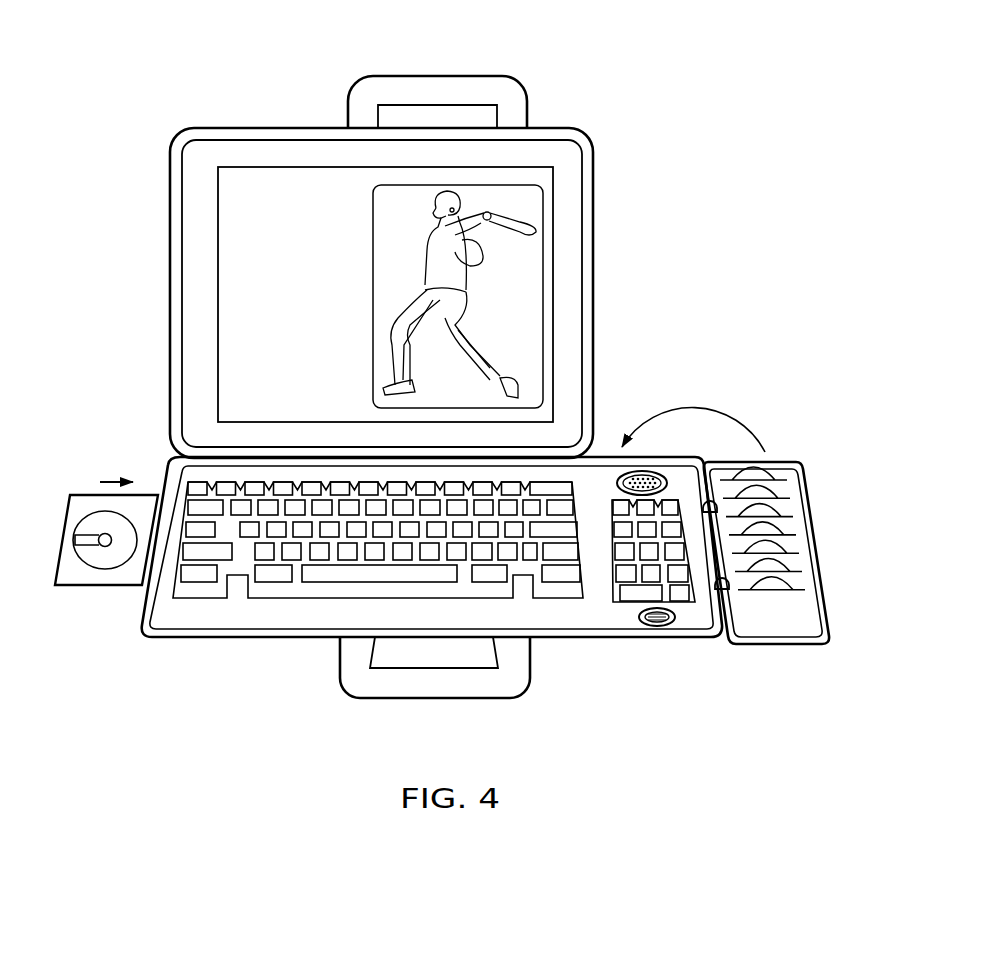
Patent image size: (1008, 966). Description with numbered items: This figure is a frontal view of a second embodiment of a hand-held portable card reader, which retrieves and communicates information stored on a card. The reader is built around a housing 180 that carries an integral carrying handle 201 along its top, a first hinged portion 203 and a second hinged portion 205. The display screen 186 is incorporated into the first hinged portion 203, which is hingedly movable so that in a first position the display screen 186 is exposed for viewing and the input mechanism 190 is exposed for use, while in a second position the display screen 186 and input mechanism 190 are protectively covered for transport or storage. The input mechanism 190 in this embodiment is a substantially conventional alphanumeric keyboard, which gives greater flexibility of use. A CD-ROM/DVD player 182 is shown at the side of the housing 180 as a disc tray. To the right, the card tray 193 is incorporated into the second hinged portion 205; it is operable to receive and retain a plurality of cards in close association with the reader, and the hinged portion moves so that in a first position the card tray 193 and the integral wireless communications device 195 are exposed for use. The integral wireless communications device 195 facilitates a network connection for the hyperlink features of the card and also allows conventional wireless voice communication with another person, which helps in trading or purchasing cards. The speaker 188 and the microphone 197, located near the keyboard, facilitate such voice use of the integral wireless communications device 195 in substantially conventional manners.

The housing 180 is at (133, 641).
The CD-ROM/DVD player 182 is at (97, 577).
The display screen 186 is at (546, 212).
The speaker 188 is at (655, 471).
The input mechanism 190 is at (278, 603).
The card tray 193 is at (811, 501).
The integral wireless communications device 195 is at (616, 558).
The microphone 197 is at (657, 626).
The integral carrying handle 201 is at (531, 66).
The first hinged portion 203 is at (126, 124).
The second hinged portion 205 is at (831, 651).